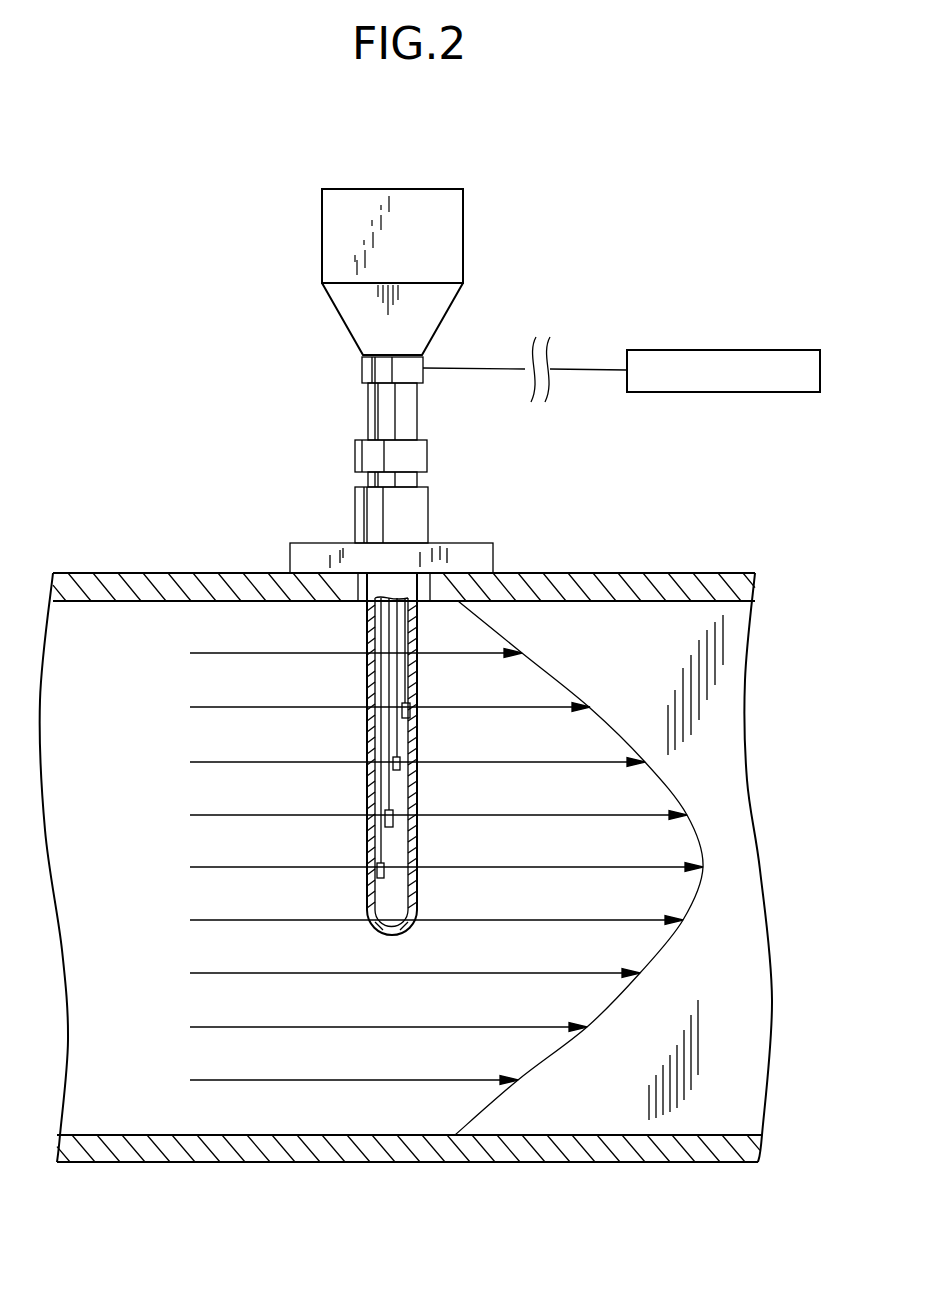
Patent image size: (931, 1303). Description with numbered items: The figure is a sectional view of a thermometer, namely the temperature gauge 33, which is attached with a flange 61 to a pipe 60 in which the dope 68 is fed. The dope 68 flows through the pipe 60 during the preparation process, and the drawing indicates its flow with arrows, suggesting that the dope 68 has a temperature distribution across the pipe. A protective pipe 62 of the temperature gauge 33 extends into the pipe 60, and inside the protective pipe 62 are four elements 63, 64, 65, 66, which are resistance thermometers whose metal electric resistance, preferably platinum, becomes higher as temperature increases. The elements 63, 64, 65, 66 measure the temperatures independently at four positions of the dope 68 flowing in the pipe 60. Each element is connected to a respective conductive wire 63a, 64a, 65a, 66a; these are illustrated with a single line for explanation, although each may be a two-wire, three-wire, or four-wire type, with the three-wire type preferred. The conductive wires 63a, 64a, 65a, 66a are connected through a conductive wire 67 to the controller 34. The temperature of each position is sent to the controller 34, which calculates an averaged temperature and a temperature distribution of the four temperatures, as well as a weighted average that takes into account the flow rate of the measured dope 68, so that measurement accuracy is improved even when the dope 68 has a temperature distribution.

The temperature gauge 33 is at (430, 320).
The controller 34 is at (722, 392).
The conductive wire 67 is at (486, 368).
The pipe 60 is at (200, 572).
The flange 61 is at (465, 562).
The protective pipe 62 is at (365, 622).
The element 63 is at (377, 876).
The conductive wire 63a is at (383, 845).
The element 64 is at (384, 823).
The conductive wire 64a is at (390, 797).
The element 65 is at (391, 774).
The conductive wire 65a is at (397, 752).
The element 66 is at (410, 708).
The conductive wire 66a is at (405, 670).
The dope 68 is at (213, 918).